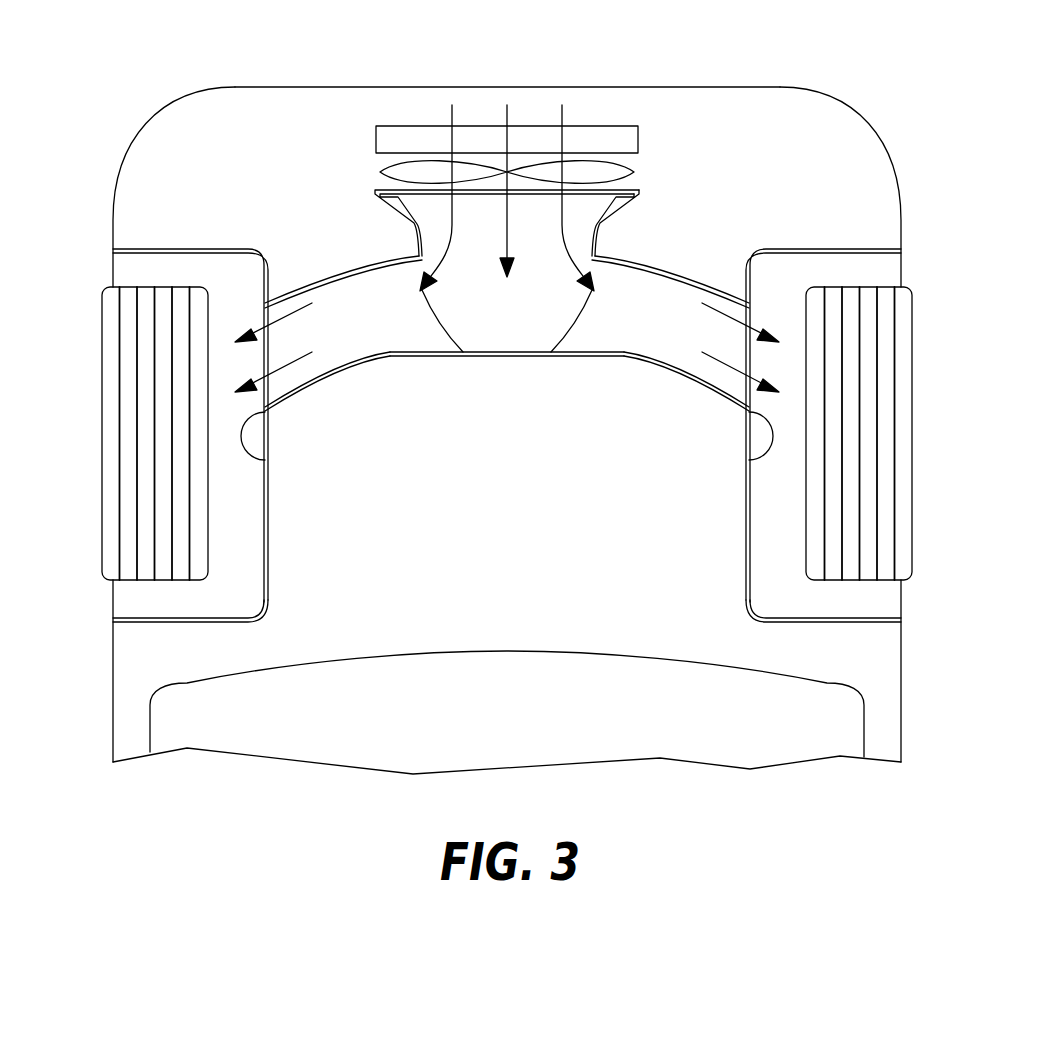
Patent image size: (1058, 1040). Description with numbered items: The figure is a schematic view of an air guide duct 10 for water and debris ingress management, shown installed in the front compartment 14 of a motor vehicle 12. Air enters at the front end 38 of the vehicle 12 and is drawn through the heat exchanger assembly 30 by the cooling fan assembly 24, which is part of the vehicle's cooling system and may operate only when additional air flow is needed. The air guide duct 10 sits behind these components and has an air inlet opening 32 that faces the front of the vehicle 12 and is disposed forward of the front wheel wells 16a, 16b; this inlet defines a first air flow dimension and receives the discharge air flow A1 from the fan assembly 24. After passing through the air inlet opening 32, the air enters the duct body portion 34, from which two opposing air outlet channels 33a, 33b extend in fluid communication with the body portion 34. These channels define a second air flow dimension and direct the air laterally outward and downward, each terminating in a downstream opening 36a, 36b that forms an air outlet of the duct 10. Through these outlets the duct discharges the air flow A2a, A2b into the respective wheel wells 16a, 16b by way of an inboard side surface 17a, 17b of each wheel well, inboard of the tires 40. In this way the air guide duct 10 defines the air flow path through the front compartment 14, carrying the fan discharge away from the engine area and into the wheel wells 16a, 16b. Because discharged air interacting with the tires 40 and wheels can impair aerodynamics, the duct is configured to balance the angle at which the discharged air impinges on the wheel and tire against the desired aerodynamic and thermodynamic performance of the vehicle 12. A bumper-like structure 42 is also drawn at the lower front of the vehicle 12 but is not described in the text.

The air guide duct 10 is at (508, 357).
The motor vehicle 12 is at (518, 393).
The front compartment 14 is at (521, 548).
The wheel well 16a is at (138, 604).
The wheel well 16b is at (880, 601).
The inboard side surface 17a is at (266, 458).
The inboard side surface 17b is at (748, 455).
The cooling fan assembly 24 is at (620, 176).
The heat exchanger assembly 30 is at (640, 139).
The air inlet opening 32 is at (378, 192).
The air outlet channel 33a is at (357, 365).
The air outlet channel 33b is at (664, 364).
The duct body portion 34 is at (538, 297).
The downstream opening 36a is at (270, 300).
The downstream opening 36b is at (744, 300).
The front end 38 is at (340, 87).
The tires 40 is at (128, 363).
The front bumper 42 is at (693, 740).
The discharge air flow A1 is at (507, 198).
The air flow A2a is at (273, 347).
The air flow A2b is at (740, 347).